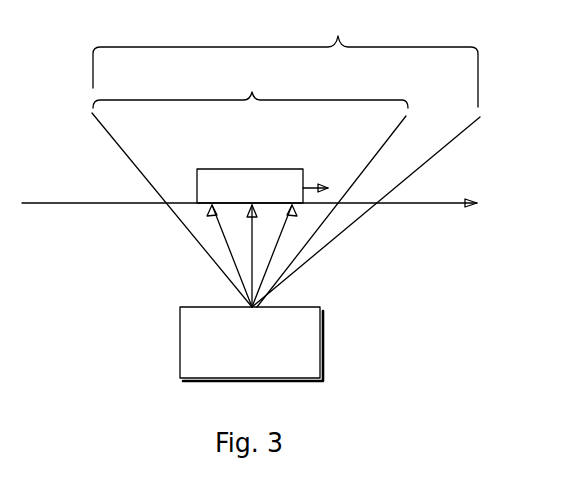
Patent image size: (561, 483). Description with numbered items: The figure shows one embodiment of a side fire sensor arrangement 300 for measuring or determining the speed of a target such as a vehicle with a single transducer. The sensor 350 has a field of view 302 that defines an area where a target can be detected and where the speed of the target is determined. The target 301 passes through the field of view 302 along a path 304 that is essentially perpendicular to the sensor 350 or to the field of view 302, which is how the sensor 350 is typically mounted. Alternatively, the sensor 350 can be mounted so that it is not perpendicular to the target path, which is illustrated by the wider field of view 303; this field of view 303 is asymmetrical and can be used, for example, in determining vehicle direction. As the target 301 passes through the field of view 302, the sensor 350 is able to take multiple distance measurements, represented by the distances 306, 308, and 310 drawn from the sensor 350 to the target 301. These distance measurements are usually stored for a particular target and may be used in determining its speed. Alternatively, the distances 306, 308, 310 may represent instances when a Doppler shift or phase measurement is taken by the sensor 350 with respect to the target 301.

The sensor system 300 is at (410, 296).
The target 301 is at (250, 168).
The field of view 302 is at (250, 185).
The asymmetrical field of view 303 is at (286, 156).
The path of the target 304 is at (96, 205).
The distance 306 is at (222, 243).
The distance 308 is at (252, 261).
The distance 310 is at (270, 262).
The sensor 350 is at (322, 343).